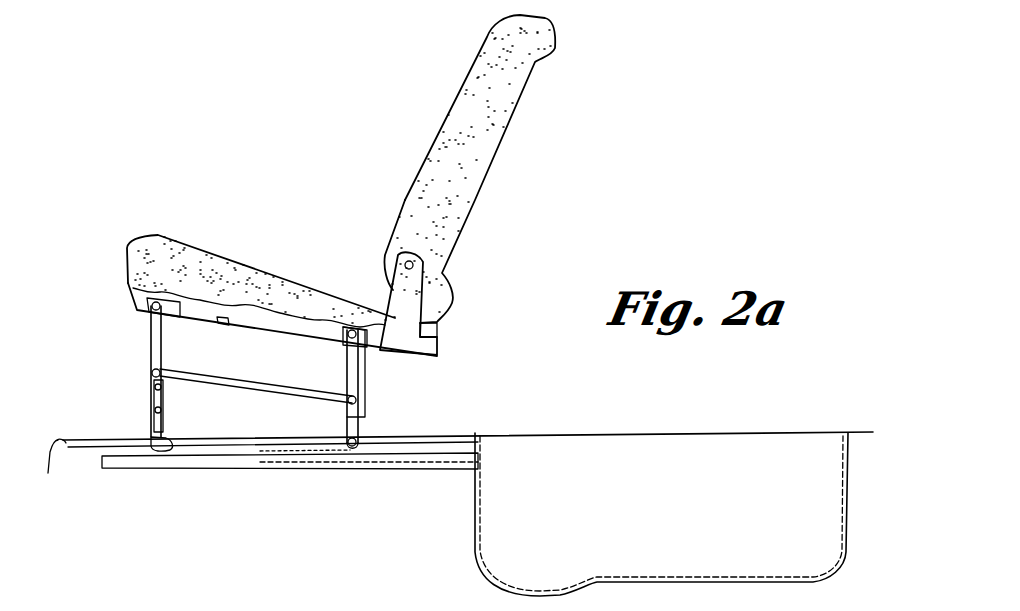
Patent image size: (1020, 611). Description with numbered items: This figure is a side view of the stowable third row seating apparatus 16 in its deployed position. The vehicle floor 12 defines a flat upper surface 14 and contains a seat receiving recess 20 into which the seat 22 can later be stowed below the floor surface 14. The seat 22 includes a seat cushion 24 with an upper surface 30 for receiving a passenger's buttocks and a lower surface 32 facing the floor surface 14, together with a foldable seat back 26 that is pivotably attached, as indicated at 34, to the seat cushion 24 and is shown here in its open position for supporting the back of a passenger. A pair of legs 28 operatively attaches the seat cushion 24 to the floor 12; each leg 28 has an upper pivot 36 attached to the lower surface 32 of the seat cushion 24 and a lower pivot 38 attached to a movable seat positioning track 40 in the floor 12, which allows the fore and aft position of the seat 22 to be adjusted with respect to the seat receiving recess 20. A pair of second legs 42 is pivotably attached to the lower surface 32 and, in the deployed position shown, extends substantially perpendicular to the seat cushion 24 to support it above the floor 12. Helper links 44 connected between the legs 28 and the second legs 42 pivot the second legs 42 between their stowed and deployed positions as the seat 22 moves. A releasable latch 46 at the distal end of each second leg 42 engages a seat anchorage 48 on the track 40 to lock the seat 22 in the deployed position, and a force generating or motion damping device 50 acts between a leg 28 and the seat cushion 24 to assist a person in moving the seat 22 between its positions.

The floor 12 is at (78, 440).
The flat upper surface of the floor 14 is at (50, 468).
The stowable third row seating apparatus 16 is at (333, 157).
The seat receiving recess 20 is at (685, 509).
The seat 22 is at (462, 199).
The seat cushion 24 is at (246, 283).
The foldable seat back 26 is at (492, 115).
The legs 28 is at (352, 366).
The upper surface of the seat cushion 30 is at (263, 266).
The lower surface of the seat cushion 32 is at (282, 338).
The pivotable attachment of seat back 34 is at (415, 264).
The upper pivot 36 is at (346, 348).
The lower pivot 38 is at (356, 440).
The seat positioning track 40 is at (275, 470).
The second legs 42 is at (146, 340).
The helper links 44 is at (246, 393).
The releasable latch 46 is at (153, 418).
The seat anchorage 48 is at (153, 437).
The force generating device 50 is at (361, 386).